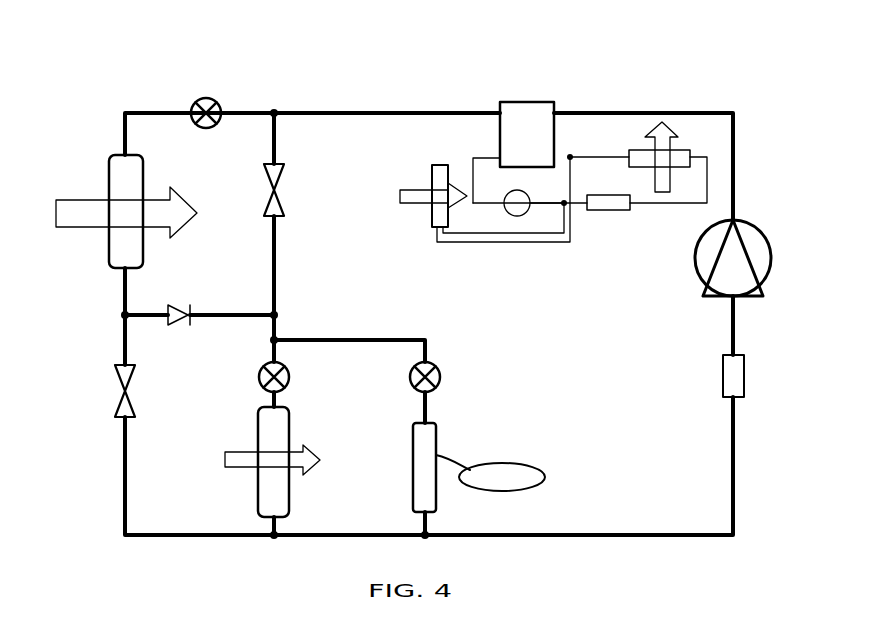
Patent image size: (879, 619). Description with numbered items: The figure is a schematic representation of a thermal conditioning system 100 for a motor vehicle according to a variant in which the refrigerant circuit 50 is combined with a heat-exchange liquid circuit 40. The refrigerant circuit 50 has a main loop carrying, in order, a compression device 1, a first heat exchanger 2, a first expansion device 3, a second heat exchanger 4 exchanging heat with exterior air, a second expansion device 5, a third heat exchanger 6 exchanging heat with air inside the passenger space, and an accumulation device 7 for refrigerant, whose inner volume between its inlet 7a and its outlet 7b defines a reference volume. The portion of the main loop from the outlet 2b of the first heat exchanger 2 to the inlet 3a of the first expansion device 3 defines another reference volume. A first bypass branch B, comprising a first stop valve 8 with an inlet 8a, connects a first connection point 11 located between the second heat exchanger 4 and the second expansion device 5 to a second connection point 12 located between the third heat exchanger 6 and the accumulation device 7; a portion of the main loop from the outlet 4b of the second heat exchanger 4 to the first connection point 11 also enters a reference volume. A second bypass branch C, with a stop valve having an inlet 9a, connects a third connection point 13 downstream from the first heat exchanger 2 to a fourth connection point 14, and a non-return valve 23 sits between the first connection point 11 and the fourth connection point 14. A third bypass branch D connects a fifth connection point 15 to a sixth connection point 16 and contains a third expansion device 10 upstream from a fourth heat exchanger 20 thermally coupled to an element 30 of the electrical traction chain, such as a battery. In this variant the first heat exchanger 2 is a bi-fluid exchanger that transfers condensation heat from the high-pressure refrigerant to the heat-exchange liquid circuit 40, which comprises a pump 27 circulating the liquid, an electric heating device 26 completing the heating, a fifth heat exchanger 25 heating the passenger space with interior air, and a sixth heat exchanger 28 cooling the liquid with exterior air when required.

The thermal conditioning system 100 is at (539, 67).
The compression device 1 is at (740, 258).
The first heat exchanger 2 is at (542, 112).
The outlet of the first heat exchanger 2b is at (500, 112).
The first expansion device 3 is at (218, 104).
The inlet of the first expansion device 3a is at (216, 124).
The second heat exchanger 4 is at (125, 181).
The outlet of the second heat exchanger 4b is at (125, 270).
The second expansion device 5 is at (290, 376).
The third heat exchanger 6 is at (270, 433).
The accumulation device 7 is at (735, 377).
The inlet of the accumulation device 7a is at (736, 398).
The outlet of the accumulation device 7b is at (736, 355).
The first stop valve 8 is at (115, 410).
The inlet of the first stop valve 8a is at (131, 366).
The inlet of the second stop valve 9a is at (286, 166).
The third expansion device 10 is at (441, 377).
The first connection point 11 is at (122, 316).
The second connection point 12 is at (280, 538).
The third connection point 13 is at (278, 115).
The fourth connection point 14 is at (278, 314).
The fifth connection point 15 is at (270, 340).
The sixth connection point 16 is at (430, 538).
The fourth heat exchanger 20 is at (432, 442).
The non-return valve 23 is at (177, 306).
The fifth heat exchanger 25 is at (676, 157).
The heating device 26 is at (615, 211).
The pump 27 is at (512, 196).
The sixth heat exchanger 28 is at (438, 218).
The element of the electrical traction chain 30 is at (508, 476).
The heat-exchange liquid circuit 40 is at (690, 204).
The refrigerant circuit 50 is at (722, 542).
The first bypass branch B is at (124, 460).
The second bypass branch C is at (277, 282).
The third bypass branch D is at (382, 340).